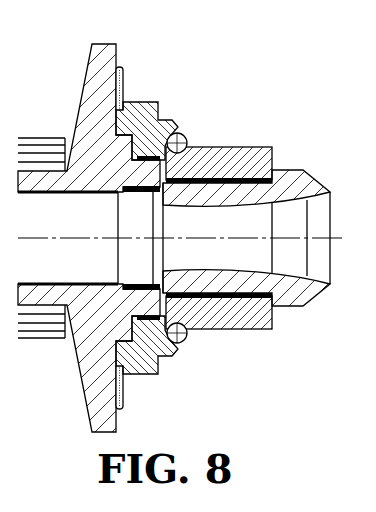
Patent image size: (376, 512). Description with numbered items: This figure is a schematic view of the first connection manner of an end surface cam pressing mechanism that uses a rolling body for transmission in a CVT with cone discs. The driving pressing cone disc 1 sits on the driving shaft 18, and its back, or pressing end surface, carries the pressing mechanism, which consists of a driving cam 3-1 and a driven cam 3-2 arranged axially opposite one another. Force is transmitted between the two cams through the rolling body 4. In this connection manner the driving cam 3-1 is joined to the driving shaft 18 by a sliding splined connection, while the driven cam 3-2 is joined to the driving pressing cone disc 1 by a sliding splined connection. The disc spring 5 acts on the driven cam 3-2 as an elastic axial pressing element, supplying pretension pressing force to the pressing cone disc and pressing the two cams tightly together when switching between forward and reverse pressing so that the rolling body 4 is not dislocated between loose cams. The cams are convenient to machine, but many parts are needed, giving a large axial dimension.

The driving pressing cone disc 1 is at (97, 105).
The disc spring 5 is at (120, 72).
The driven cam 3-2 is at (135, 118).
The driving cam 3-1 is at (248, 152).
The rolling body 4 is at (183, 136).
The driving shaft 18 is at (290, 188).